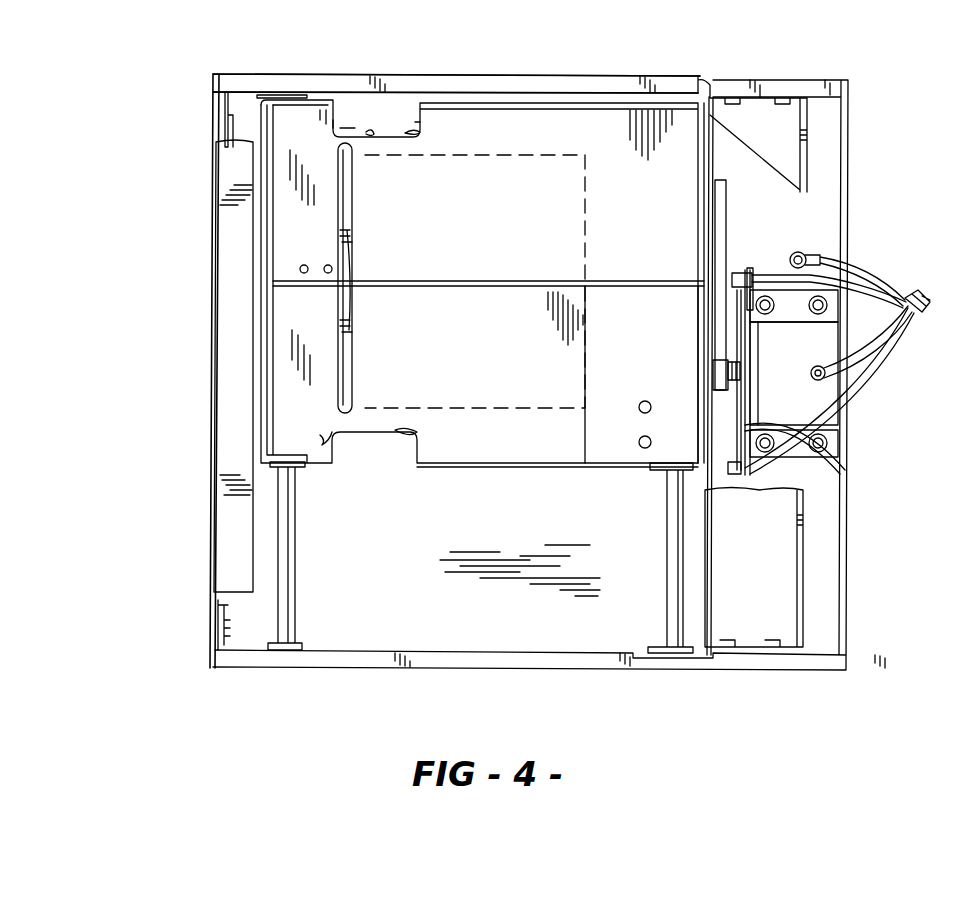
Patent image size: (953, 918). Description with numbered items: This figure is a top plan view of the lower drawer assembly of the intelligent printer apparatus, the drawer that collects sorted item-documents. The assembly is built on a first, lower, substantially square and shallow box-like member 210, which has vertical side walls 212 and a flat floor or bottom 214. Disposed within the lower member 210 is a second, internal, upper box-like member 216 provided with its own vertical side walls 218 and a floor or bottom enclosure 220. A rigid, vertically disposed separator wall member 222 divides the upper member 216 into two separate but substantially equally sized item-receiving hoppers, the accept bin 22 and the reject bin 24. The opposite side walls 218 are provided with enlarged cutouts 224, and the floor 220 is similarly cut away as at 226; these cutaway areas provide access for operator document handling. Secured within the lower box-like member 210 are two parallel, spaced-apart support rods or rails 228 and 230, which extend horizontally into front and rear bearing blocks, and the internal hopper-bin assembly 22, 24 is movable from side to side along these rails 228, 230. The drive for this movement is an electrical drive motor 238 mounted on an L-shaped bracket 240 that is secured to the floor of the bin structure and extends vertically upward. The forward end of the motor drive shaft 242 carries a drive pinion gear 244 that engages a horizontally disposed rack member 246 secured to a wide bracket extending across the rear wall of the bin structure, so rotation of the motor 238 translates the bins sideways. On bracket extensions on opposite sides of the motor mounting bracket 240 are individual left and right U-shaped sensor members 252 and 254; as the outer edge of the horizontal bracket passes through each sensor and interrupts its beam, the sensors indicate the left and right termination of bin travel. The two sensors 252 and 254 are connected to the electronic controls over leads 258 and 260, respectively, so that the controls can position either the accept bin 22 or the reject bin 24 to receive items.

The lower box-like member 210 is at (505, 632).
The vertical side walls 212 is at (372, 91).
The flat floor 214 is at (404, 540).
The upper box-like member 216 is at (565, 434).
The vertical side walls 218 is at (600, 110).
The floor or bottom enclosure 220 is at (651, 343).
The separator wall member 222 is at (596, 283).
The cutouts 224 is at (422, 128).
The cutaway area 226 is at (372, 132).
The support rod or rail 228 is at (276, 536).
The support rod or rail 230 is at (668, 540).
The electrical drive motor 238 is at (812, 402).
The L-shaped bracket 240 is at (826, 445).
The motor drive shaft 242 is at (741, 378).
The drive pinion gear 244 is at (730, 366).
The rack member 246 is at (716, 344).
The U-shaped sensor member 252 is at (746, 276).
The U-shaped sensor member 254 is at (736, 476).
The lead 258 is at (838, 291).
The lead 260 is at (787, 459).
The accept bin 22 is at (503, 221).
The reject bin 24 is at (477, 369).